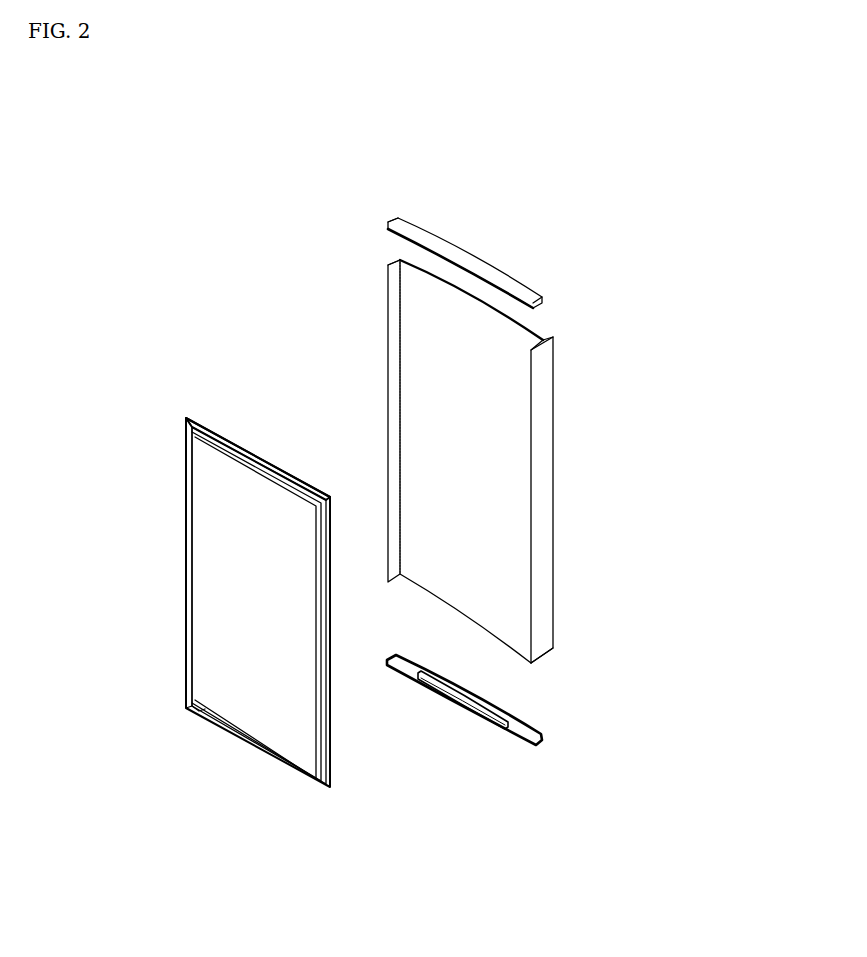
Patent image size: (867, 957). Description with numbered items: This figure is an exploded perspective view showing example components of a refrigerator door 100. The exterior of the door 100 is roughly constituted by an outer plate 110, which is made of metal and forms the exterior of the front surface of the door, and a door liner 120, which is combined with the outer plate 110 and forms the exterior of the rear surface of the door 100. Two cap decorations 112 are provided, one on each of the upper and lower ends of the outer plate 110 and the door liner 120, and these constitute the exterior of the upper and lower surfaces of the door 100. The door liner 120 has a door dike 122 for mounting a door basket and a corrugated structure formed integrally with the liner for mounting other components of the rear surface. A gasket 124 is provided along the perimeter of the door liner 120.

The door 100 is at (222, 278).
The outer plate 110 is at (556, 477).
The cap decoration 112 is at (486, 249).
The door liner 120 is at (240, 745).
The door dike 122 is at (190, 665).
The gasket 124 is at (216, 432).